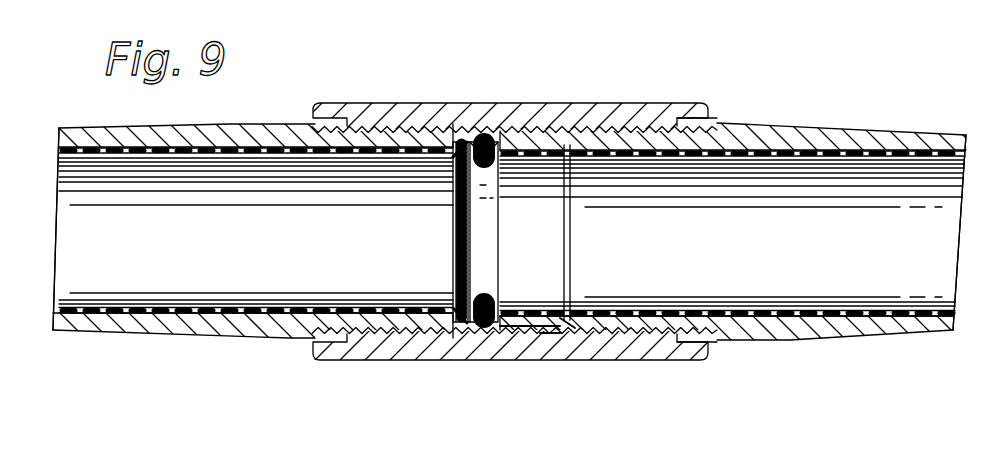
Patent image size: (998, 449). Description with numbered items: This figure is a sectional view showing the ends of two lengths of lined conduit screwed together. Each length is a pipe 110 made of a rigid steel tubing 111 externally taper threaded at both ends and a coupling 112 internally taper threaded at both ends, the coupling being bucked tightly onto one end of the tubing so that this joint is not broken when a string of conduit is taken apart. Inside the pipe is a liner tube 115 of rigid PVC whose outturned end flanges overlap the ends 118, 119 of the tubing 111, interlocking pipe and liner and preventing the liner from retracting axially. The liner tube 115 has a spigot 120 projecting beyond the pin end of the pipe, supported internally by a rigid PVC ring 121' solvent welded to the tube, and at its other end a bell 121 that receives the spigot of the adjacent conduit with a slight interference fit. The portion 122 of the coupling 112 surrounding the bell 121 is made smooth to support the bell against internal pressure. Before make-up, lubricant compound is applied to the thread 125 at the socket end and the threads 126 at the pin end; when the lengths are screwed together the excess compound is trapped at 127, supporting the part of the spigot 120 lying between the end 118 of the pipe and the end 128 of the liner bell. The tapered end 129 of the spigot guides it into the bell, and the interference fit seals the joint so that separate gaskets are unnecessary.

The pipe 110 is at (277, 340).
The tubing 111 is at (92, 337).
The coupling 112 is at (458, 352).
The tube 115 is at (265, 302).
The end of the tubing 118 is at (573, 327).
The end of the tubing 119 is at (676, 0).
The spigot 120 is at (525, 320).
The bell 121 is at (474, 232).
The ring 121' is at (546, 233).
The portion of the coupling 122 is at (746, 0).
The thread at the socket end 125 is at (550, 135).
The threads at the pin end 126 is at (680, 337).
The trapped compound 127 is at (547, 340).
The end of the liner bell 128 is at (540, 340).
The tapered end of the liner spigot 129 is at (490, 147).